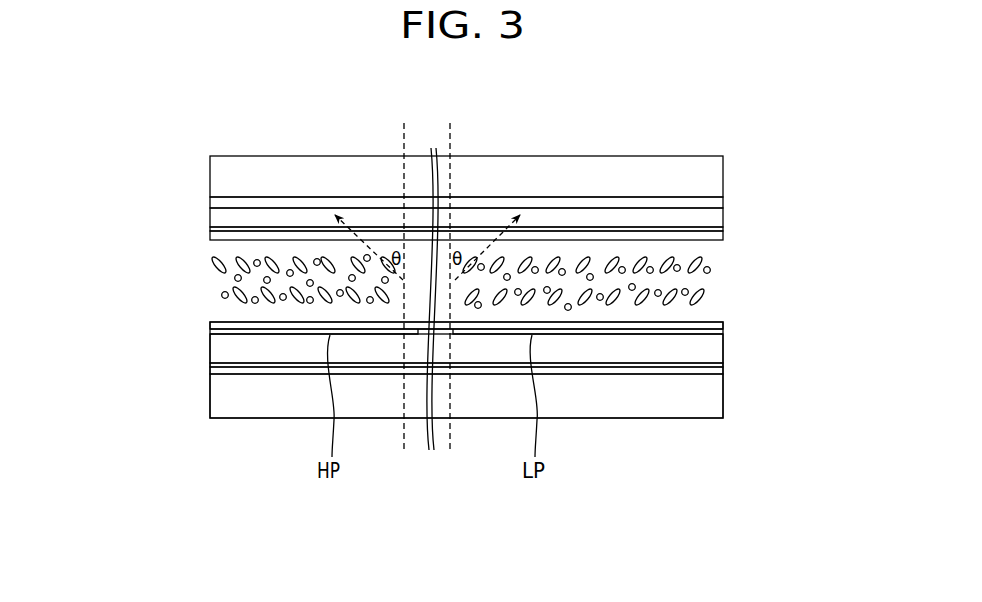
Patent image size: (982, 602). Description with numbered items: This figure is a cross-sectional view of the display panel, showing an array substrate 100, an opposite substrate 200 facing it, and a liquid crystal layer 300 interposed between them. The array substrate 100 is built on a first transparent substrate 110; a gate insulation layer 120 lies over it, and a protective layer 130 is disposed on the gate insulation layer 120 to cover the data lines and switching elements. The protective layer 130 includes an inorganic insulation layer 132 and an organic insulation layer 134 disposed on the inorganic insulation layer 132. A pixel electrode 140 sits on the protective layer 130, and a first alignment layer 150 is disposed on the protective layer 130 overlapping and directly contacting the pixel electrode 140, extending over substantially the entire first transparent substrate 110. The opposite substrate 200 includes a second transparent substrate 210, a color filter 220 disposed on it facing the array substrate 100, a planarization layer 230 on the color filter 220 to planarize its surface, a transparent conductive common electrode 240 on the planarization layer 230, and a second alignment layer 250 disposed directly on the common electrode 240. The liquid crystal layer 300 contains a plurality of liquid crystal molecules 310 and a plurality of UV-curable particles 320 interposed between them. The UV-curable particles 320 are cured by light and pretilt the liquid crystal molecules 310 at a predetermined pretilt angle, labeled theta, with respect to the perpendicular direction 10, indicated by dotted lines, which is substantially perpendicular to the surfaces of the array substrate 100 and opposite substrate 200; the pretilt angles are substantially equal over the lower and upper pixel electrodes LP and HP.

The perpendicular direction 10 is at (450, 137).
The array substrate 100 is at (388, 359).
The first transparent substrate 110 is at (409, 400).
The gate insulation layer 120 is at (215, 373).
The protective layer 130 is at (409, 355).
The inorganic insulation layer 132 is at (215, 364).
The second electrode layer 134 is at (215, 342).
The pixel electrode 140 is at (215, 333).
The first alignment layer 150 is at (215, 325).
The opposite substrate 200 is at (410, 222).
The second transparent substrate 210 is at (215, 173).
The color filter 220 is at (215, 197).
The planarization layer 230 is at (215, 219).
The common electrode 240 is at (215, 231).
The second alignment layer 250 is at (432, 259).
The liquid crystal layer 300 is at (524, 279).
The liquid crystal molecule 310 is at (714, 290).
The UV-curable particle 320 is at (719, 265).